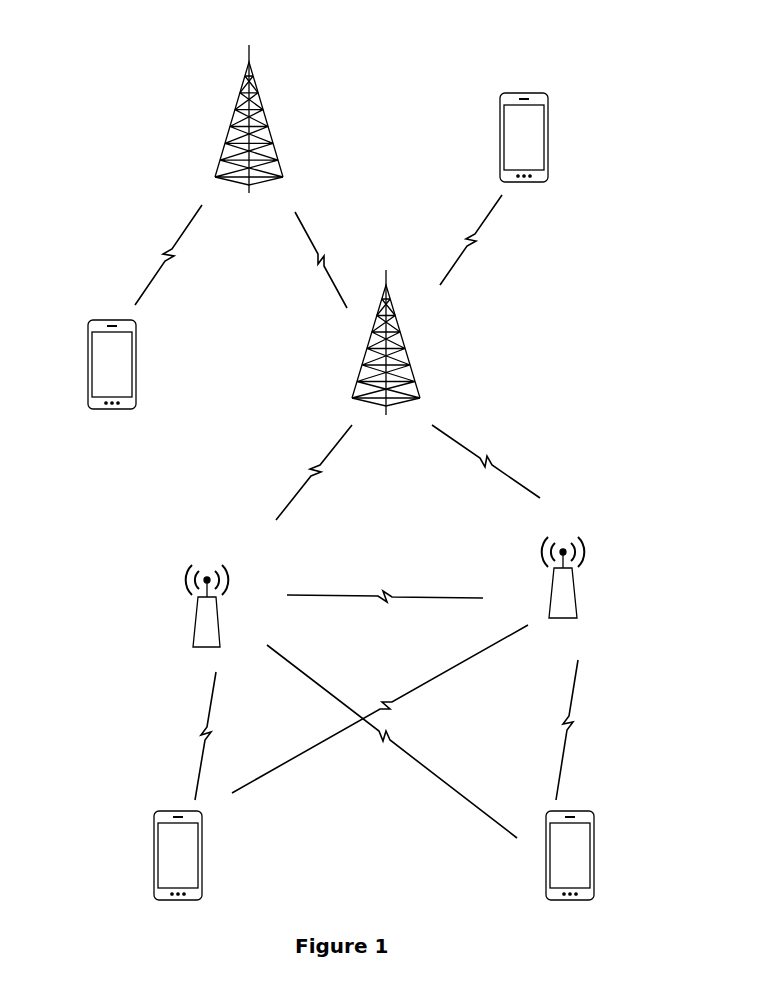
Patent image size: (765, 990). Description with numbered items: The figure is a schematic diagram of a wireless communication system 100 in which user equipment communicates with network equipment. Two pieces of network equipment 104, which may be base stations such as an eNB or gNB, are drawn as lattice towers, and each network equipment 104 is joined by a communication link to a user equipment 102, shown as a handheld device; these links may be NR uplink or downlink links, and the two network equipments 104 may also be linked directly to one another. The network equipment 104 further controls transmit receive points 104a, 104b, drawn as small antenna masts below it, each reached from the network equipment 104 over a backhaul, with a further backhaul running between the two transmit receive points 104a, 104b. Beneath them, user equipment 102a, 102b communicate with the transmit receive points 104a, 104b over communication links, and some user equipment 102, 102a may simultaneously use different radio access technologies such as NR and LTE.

The wireless communication system 100 is at (116, 66).
The user equipment 102 is at (321, 251).
The user equipment 102a is at (147, 855).
The user equipment 102b is at (602, 855).
The network equipment 104 is at (232, 118).
The transmit receive point 104a is at (174, 606).
The transmit receive point 104b is at (600, 577).